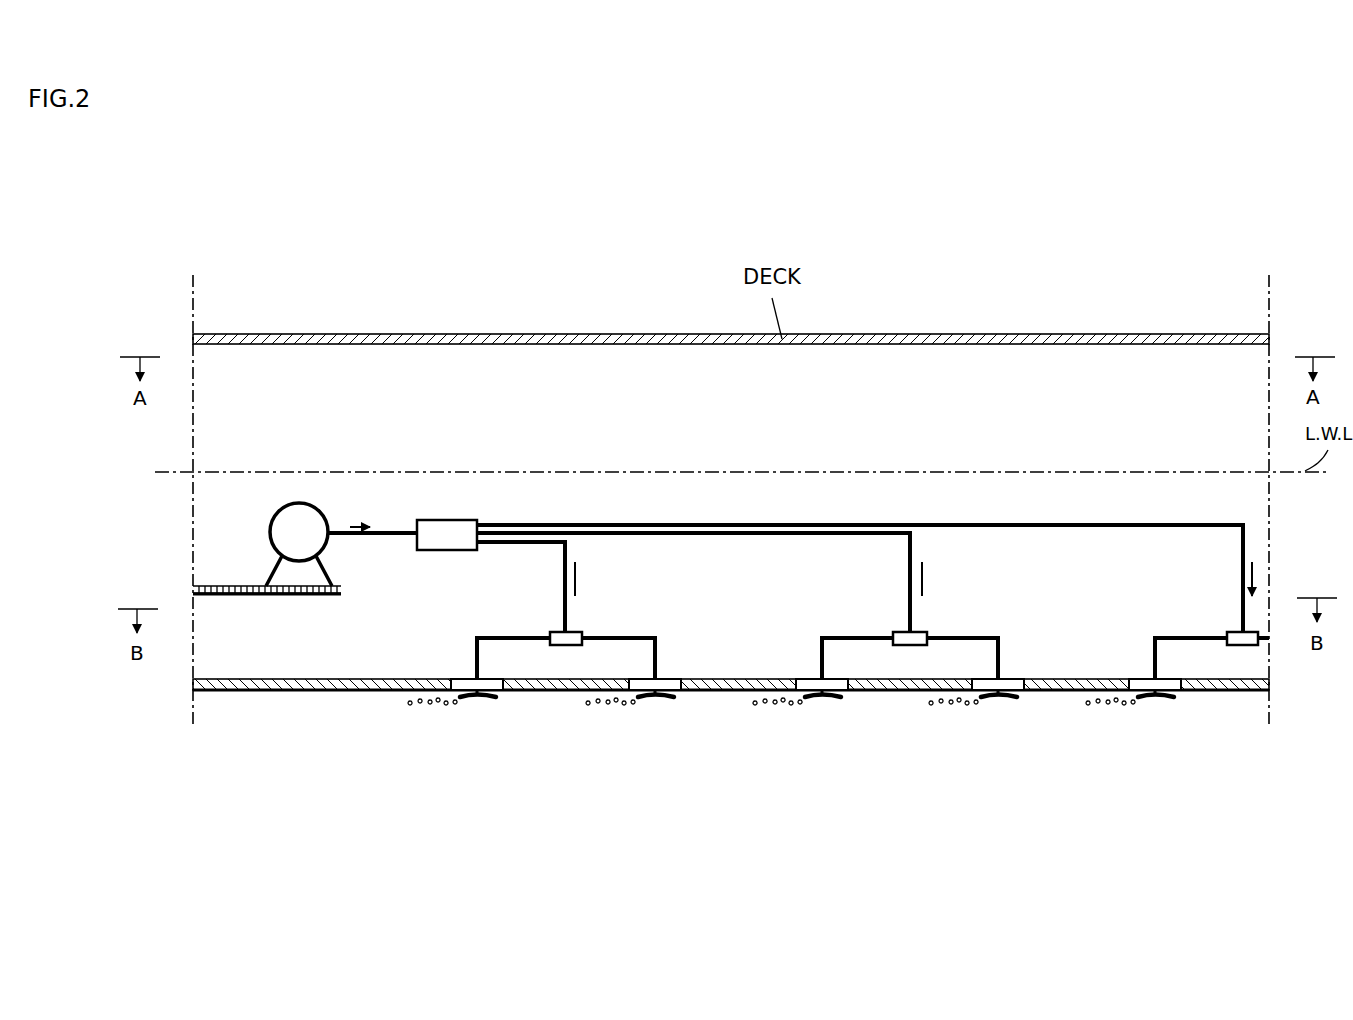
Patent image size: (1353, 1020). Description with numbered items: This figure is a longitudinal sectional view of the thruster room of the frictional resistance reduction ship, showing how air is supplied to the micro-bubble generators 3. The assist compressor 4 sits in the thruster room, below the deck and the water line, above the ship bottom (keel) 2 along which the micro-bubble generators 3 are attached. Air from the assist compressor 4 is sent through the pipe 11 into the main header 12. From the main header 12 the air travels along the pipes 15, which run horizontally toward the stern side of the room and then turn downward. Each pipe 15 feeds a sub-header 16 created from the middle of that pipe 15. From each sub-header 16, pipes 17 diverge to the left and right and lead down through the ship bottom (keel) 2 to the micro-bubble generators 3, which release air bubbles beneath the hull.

The ship bottom (keel) 2 is at (297, 691).
The micro-bubble generator 3 is at (478, 699).
The assist compressor 4 is at (288, 527).
The pipe 11 is at (384, 538).
The main header 12 is at (462, 527).
The pipe 15 is at (552, 543).
The sub-header 16 is at (560, 638).
The pipe 17 is at (478, 637).